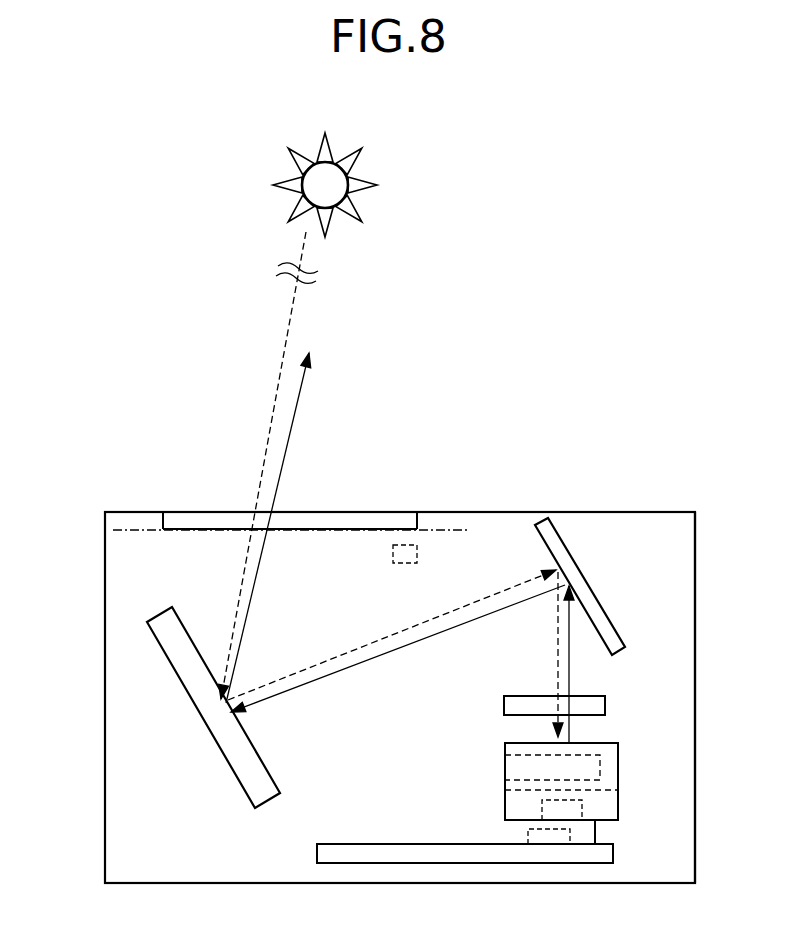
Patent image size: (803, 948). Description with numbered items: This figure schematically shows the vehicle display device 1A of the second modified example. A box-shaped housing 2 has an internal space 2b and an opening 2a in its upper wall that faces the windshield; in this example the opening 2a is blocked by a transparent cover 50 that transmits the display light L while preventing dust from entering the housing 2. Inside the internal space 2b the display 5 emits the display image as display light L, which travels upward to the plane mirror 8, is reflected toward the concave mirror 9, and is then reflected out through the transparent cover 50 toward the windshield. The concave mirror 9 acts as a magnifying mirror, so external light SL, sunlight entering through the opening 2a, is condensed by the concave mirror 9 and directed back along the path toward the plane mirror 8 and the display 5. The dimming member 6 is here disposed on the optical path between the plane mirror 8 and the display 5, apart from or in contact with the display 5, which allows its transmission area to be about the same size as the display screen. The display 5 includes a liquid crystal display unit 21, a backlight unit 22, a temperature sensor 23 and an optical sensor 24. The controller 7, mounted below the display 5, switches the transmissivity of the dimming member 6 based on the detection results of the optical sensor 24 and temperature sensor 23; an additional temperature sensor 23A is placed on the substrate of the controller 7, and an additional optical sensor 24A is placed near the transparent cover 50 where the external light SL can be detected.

The vehicle display device 1A is at (686, 386).
The housing 2 is at (653, 512).
The opening 2a is at (420, 526).
The internal space 2b is at (672, 560).
The transparent cover 50 is at (176, 538).
The optical sensor 24A is at (418, 555).
The plane mirror 8 is at (572, 547).
The concave mirror 9 is at (155, 640).
The external light SL is at (283, 340).
The display light L is at (303, 388).
The dimming member 6 is at (610, 705).
The display 5 is at (628, 773).
The liquid crystal display unit 21 is at (592, 743).
The temperature sensor 23 is at (618, 762).
The backlight unit 22 is at (618, 790).
The optical sensor 24 is at (586, 807).
The temperature sensor 23A is at (572, 832).
The controller 7 is at (618, 853).